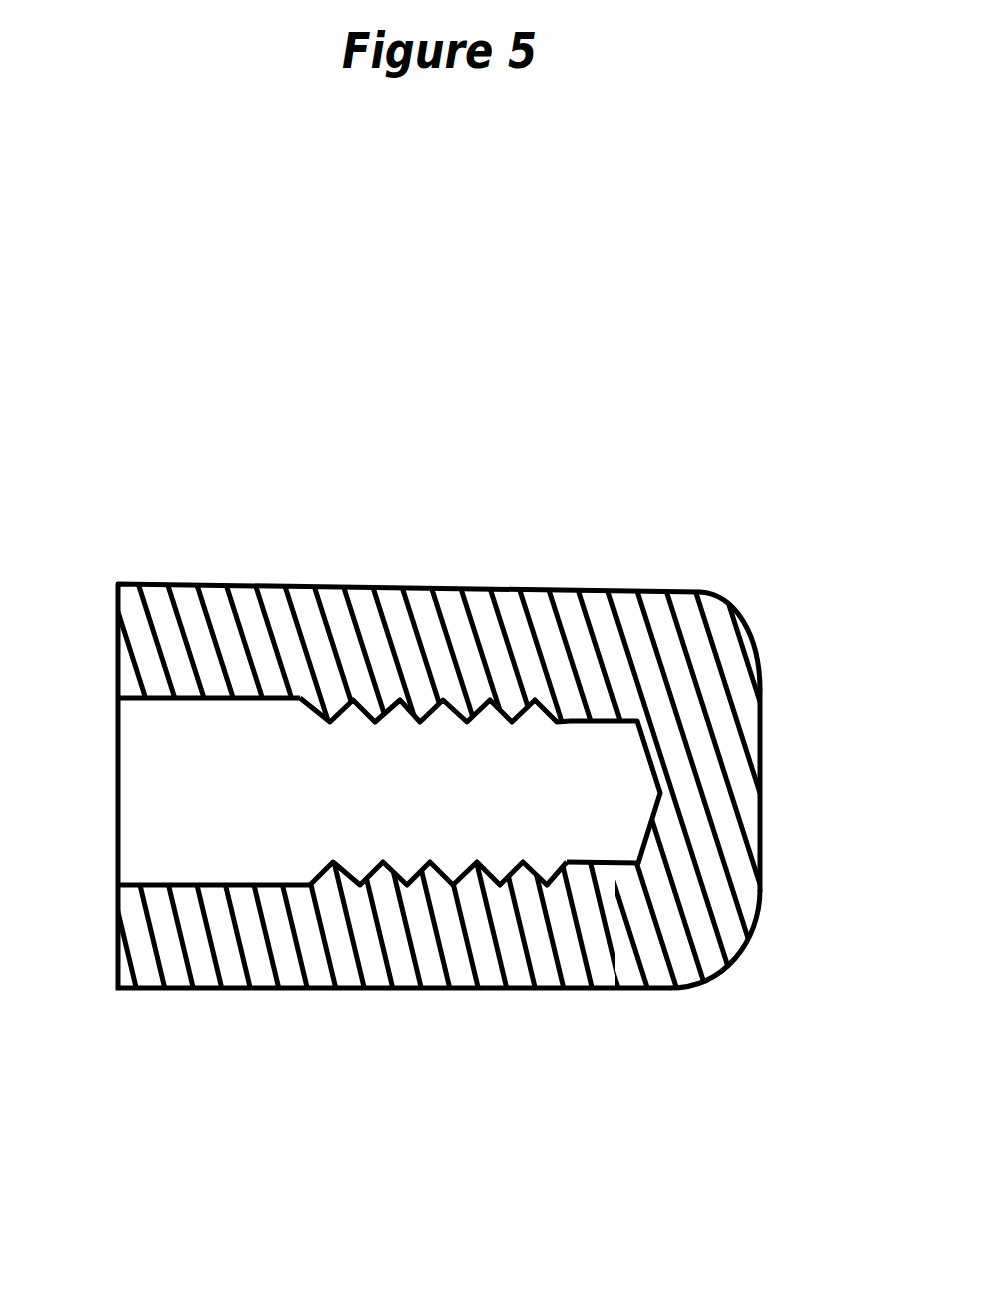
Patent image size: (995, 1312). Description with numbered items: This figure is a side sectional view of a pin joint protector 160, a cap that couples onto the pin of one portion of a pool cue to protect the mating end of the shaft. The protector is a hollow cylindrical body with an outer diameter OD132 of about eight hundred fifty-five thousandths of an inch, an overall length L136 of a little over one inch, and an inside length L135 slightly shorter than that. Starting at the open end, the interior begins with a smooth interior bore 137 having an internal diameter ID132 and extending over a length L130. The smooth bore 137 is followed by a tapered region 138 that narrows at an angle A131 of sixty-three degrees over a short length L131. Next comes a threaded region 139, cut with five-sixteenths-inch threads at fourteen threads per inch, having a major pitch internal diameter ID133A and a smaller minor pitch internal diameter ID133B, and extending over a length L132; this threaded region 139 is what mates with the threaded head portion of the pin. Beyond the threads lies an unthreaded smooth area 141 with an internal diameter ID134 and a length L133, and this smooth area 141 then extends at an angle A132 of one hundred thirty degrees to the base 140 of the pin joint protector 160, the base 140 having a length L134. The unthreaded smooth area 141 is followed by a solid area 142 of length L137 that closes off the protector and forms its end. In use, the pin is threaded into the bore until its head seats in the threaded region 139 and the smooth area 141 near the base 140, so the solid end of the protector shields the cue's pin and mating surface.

The pin joint protector 160 is at (800, 368).
The smooth interior bore 137 is at (170, 700).
The tapered region 138 is at (320, 812).
The threaded region 139 is at (497, 722).
The base 140 is at (762, 778).
The unthreaded smooth area 141 is at (605, 857).
The solid area 142 is at (712, 593).
The internal diameter of smooth bore ID132 is at (237, 700).
The major pitch internal diameter ID133A is at (377, 698).
The minor pitch internal diameter ID133B is at (437, 725).
The internal diameter of unthreaded smooth area ID134 is at (596, 722).
The outer diameter OD132 is at (435, 990).
The length of smooth bore L130 is at (312, 823).
The length of tapered region L131 is at (333, 862).
The length of threaded region L132 is at (575, 855).
The length of unthreaded smooth area L133 is at (632, 855).
The length of base L134 is at (636, 995).
The inside length L135 is at (657, 491).
The overall length L136 is at (755, 417).
The length of solid area L137 is at (755, 491).
The taper angle A131 is at (322, 808).
The base angle A132 is at (645, 1070).